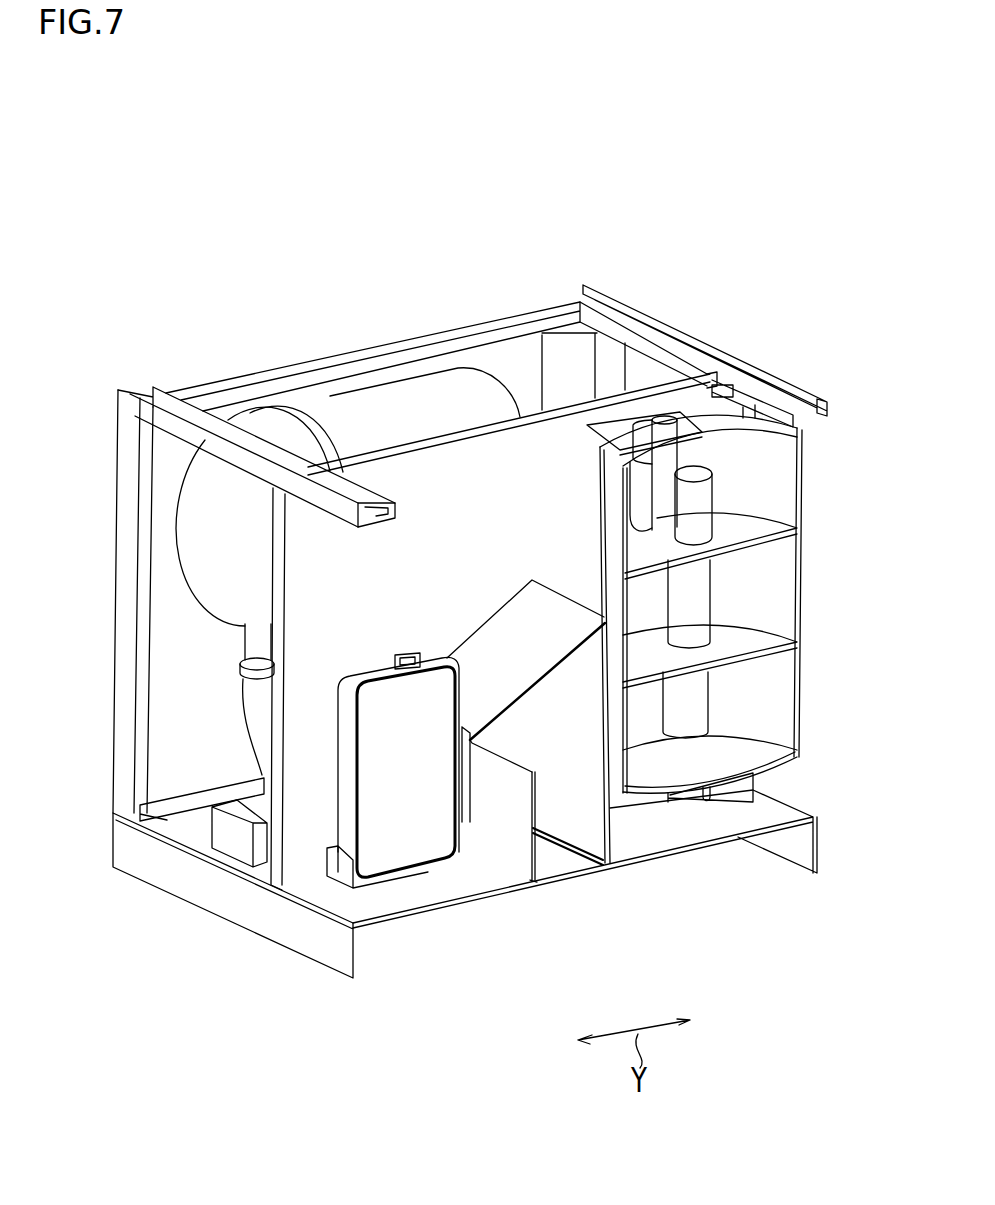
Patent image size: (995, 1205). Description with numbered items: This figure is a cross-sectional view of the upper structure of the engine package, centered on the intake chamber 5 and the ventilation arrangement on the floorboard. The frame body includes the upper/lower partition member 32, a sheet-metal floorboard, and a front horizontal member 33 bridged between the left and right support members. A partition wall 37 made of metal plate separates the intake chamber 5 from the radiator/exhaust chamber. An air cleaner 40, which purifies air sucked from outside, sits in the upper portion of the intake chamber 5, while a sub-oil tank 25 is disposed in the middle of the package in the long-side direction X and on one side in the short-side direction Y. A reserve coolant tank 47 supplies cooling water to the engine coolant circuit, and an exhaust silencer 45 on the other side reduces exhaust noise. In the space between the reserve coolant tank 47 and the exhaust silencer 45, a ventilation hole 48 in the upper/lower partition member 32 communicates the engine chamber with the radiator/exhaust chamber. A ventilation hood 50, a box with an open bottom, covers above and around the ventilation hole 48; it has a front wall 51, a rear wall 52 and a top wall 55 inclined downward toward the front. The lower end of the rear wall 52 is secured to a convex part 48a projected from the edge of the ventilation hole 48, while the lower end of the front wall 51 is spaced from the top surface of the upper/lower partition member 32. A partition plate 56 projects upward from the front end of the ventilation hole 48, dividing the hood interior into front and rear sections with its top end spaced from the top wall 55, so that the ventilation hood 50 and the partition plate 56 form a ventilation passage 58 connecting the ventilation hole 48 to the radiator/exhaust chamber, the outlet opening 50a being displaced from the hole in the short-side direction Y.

The intake chamber 5 is at (518, 370).
The sub-oil tank 25 is at (124, 614).
The upper/lower partition member 32 is at (185, 430).
The front horizontal member 33 is at (708, 342).
The partition wall 37 is at (448, 490).
The air cleaner 40 is at (367, 420).
The exhaust silencer 45 is at (803, 597).
The reserve coolant tank 47 is at (345, 765).
The ventilation hole 48 is at (540, 857).
The convex part 48a is at (575, 858).
The ventilation hood 50 is at (452, 619).
The outlet opening 50a is at (500, 870).
The front wall 51 is at (470, 780).
The rear wall 52 is at (623, 743).
The top wall 55 is at (494, 633).
The partition plate 56 is at (502, 815).
The ventilation passage 58 is at (570, 755).